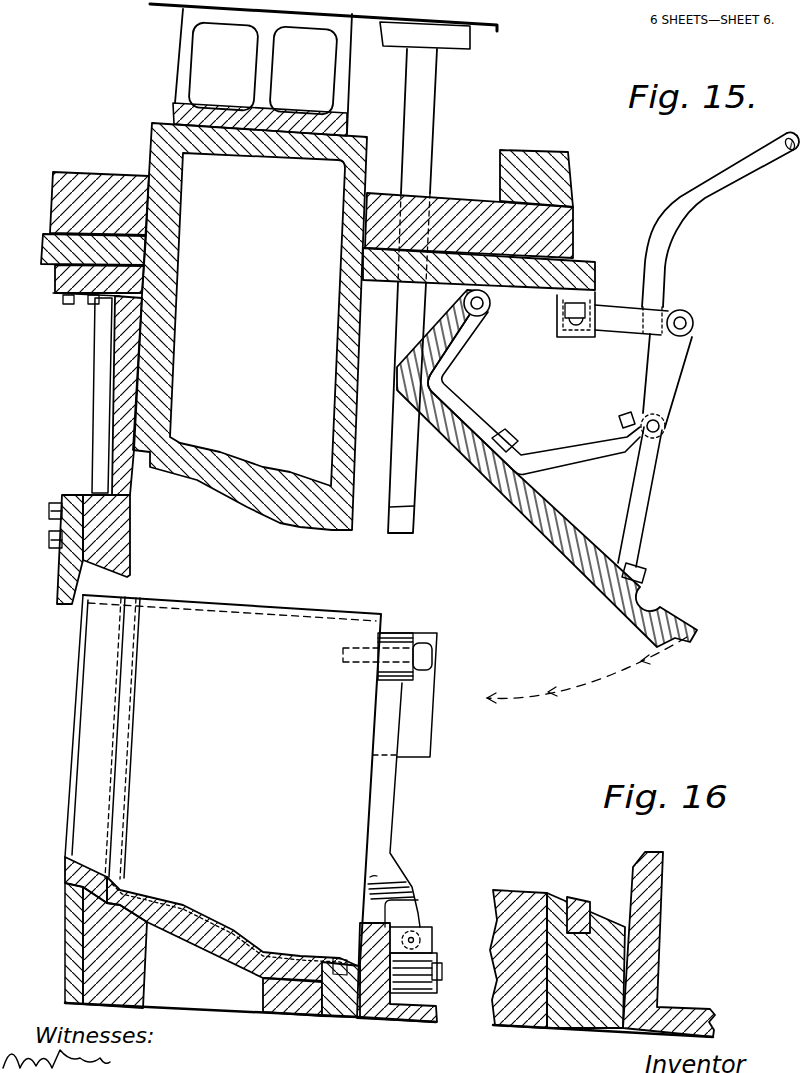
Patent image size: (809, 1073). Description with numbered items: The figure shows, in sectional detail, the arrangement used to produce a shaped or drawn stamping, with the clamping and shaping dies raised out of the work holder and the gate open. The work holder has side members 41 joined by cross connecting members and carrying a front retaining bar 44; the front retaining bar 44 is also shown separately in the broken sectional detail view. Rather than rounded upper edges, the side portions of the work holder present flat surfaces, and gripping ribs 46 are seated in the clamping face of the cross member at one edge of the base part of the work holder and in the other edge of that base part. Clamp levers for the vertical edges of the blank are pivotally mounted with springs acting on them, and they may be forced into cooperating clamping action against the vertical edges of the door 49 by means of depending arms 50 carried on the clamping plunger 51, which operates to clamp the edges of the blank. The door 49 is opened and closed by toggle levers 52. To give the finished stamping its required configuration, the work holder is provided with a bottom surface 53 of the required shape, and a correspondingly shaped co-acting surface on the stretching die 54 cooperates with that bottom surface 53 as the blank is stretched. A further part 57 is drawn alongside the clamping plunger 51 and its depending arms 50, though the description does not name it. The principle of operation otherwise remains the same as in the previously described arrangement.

In FIG. 15, the side members 41 is at (251, 804).
In FIG. 15, the front retaining bar 44 is at (416, 1027).
In FIG. 16, the front retaining bar 44 is at (660, 965).
In FIG. 15, the gripping ribs 46 is at (331, 1014).
In FIG. 16, the gripping ribs 46 is at (593, 896).
In FIG. 15, the door 49 is at (546, 529).
In FIG. 15, the depending arms 50 is at (403, 500).
In FIG. 15, the clamping plunger 51 is at (114, 167).
In FIG. 15, the toggle levers 52 is at (657, 367).
In FIG. 15, the bottom surface 53 is at (233, 931).
In FIG. 15, the stretching die 54 is at (177, 330).
In FIG. 15, the bracket plate 57 is at (112, 427).